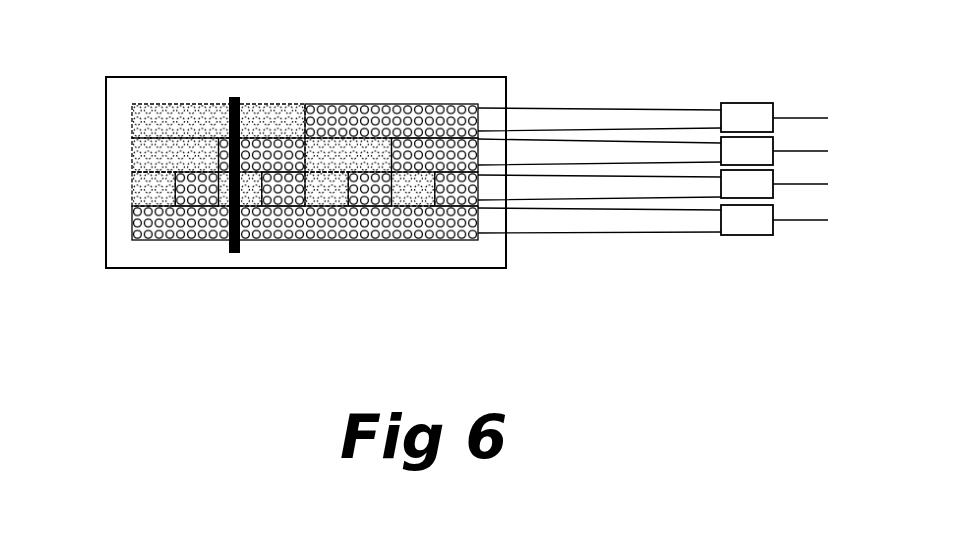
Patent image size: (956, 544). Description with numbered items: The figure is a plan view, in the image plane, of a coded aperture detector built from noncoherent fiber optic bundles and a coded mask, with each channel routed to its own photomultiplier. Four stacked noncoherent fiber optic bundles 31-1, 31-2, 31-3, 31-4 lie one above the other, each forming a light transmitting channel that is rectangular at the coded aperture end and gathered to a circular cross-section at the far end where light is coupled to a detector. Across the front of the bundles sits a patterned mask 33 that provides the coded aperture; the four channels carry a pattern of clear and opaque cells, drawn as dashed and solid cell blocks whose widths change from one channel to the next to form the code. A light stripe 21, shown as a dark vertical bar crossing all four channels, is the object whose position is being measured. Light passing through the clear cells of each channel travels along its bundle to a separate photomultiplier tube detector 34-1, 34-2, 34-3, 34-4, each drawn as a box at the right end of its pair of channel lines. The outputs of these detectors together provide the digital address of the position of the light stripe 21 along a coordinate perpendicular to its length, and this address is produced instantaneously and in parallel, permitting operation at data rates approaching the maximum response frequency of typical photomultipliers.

The patterned mask 33 is at (137, 81).
The light stripe 21 is at (237, 97).
The noncoherent fiber optic bundle 31-1 is at (494, 128).
The noncoherent fiber optic bundle 31-2 is at (137, 148).
The noncoherent fiber optic bundle 31-3 is at (137, 196).
The noncoherent fiber optic bundle 31-4 is at (509, 233).
The photomultiplier tube detector 34-1 is at (781, 100).
The photomultiplier tube detector 34-2 is at (781, 144).
The photomultiplier tube detector 34-3 is at (781, 177).
The photomultiplier tube detector 34-4 is at (781, 210).